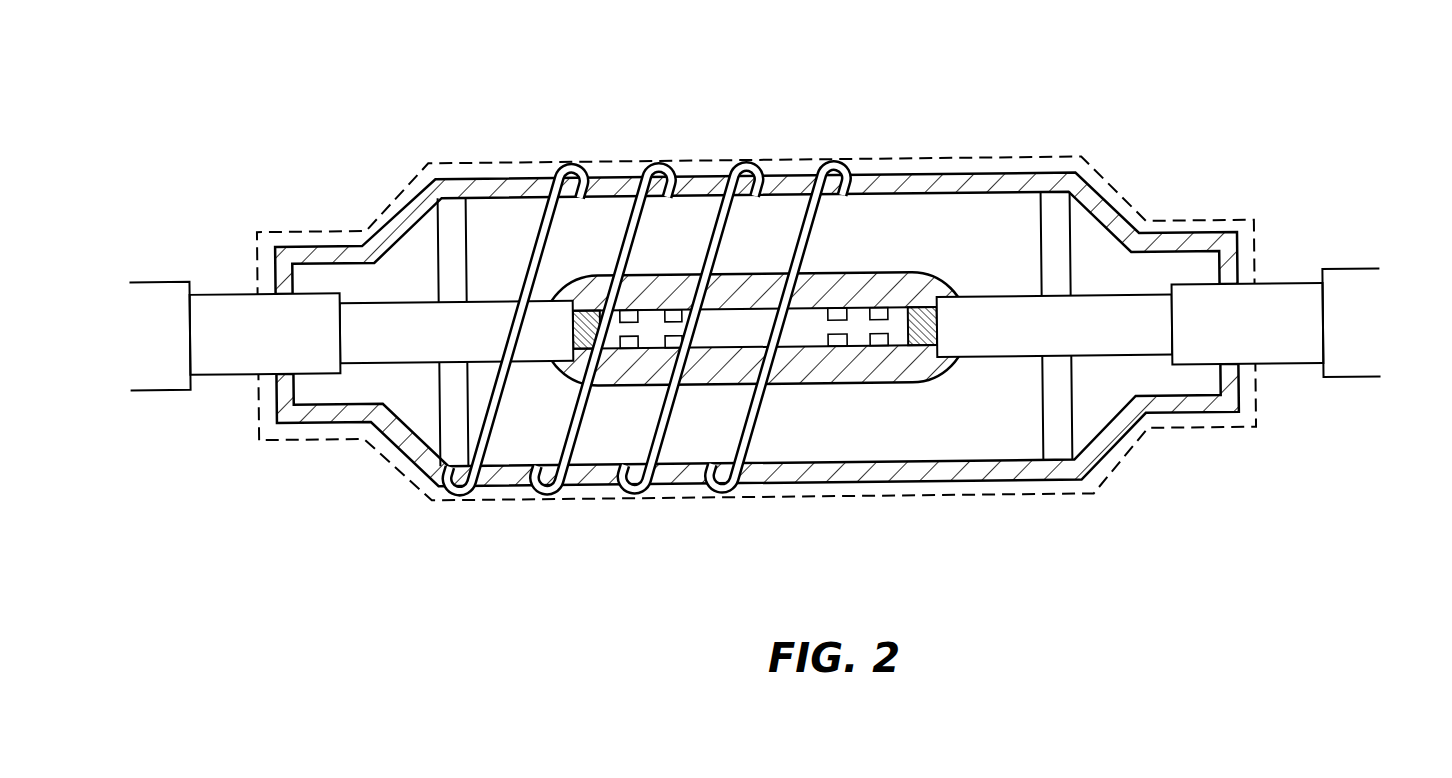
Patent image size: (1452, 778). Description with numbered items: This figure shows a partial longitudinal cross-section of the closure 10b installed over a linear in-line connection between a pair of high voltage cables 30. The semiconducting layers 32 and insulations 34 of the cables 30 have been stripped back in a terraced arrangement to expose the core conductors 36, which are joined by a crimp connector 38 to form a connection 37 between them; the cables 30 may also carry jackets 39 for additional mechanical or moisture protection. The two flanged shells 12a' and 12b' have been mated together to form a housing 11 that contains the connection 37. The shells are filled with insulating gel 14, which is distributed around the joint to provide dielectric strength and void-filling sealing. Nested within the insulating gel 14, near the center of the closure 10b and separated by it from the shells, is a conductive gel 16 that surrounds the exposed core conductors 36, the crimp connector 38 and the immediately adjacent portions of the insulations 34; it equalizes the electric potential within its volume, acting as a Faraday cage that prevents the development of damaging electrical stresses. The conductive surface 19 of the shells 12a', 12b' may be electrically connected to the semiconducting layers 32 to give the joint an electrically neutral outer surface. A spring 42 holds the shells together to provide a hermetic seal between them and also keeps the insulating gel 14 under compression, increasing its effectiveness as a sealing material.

The closure 10b is at (372, 94).
The housing 11 is at (256, 486).
The shell 12a' is at (758, 465).
The shell 12b' is at (757, 219).
The insulating gel 14 is at (918, 215).
The conductive gel 16 is at (873, 365).
The conductive surface 19 is at (397, 191).
The high voltage cable 30 is at (158, 287).
The semiconducting layer 32 is at (250, 303).
The insulation 34 is at (368, 441).
The core conductor 36 is at (573, 341).
The connection 37 is at (688, 494).
The crimp connector 38 is at (748, 325).
The jacket 39 is at (1358, 283).
The spring 42 is at (663, 161).